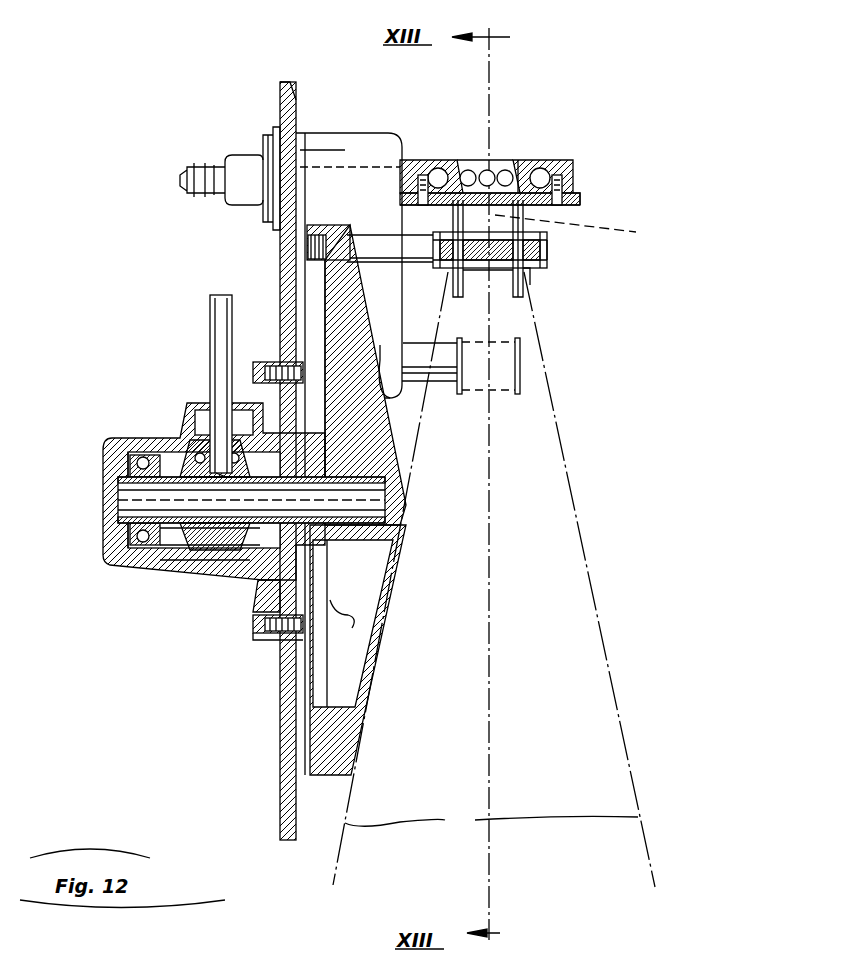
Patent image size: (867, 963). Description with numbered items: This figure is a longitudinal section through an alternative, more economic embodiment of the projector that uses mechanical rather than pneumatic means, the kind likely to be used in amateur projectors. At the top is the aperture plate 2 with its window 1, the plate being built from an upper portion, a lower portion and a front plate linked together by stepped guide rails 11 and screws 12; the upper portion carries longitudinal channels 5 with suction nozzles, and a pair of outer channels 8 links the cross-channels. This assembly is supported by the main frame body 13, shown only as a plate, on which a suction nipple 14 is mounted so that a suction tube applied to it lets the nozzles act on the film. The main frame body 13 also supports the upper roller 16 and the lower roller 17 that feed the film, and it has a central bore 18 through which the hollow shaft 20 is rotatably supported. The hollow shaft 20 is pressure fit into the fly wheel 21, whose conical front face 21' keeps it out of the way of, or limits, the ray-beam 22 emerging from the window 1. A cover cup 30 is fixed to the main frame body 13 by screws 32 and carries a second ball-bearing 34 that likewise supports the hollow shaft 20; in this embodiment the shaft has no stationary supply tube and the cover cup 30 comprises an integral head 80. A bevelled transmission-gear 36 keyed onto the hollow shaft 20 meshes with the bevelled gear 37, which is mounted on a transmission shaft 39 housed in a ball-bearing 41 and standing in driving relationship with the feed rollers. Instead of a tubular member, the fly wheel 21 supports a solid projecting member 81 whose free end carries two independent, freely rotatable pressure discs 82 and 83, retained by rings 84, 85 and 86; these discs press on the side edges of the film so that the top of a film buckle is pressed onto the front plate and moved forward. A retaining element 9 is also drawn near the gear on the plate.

The window 1 is at (524, 165).
The aperture plate 2 is at (574, 176).
The longitudinal channels 5 is at (490, 170).
The outer channels 8 is at (436, 170).
The gear retaining member 9 is at (260, 636).
The stepped guide rails 11 is at (582, 200).
The screws 12 is at (560, 210).
The main frame body 13 is at (286, 776).
The suction nipple 14 is at (240, 168).
The upper roller 16 is at (577, 229).
The lower roller 17 is at (522, 360).
The central bore 18 is at (262, 580).
The hollow shaft 20 is at (190, 560).
The fly wheel 21 is at (374, 341).
The conical front face 21' is at (371, 647).
The ray-beam 22 is at (491, 820).
The cover cup 30 is at (200, 530).
The screws 32 is at (258, 372).
The second ball-bearing 34 is at (148, 560).
The bevelled transmission-gear 36 is at (252, 580).
The bevelled gear 37 is at (186, 437).
The transmission shaft 39 is at (218, 328).
The ball-bearing 41 is at (190, 412).
The integral head 80 is at (112, 548).
The solid projecting member 81 is at (378, 255).
The pressure disc 82 is at (456, 300).
The pressure disc 83 is at (524, 286).
The ring 84 is at (476, 275).
The ring 85 is at (508, 280).
The ring 86 is at (548, 262).